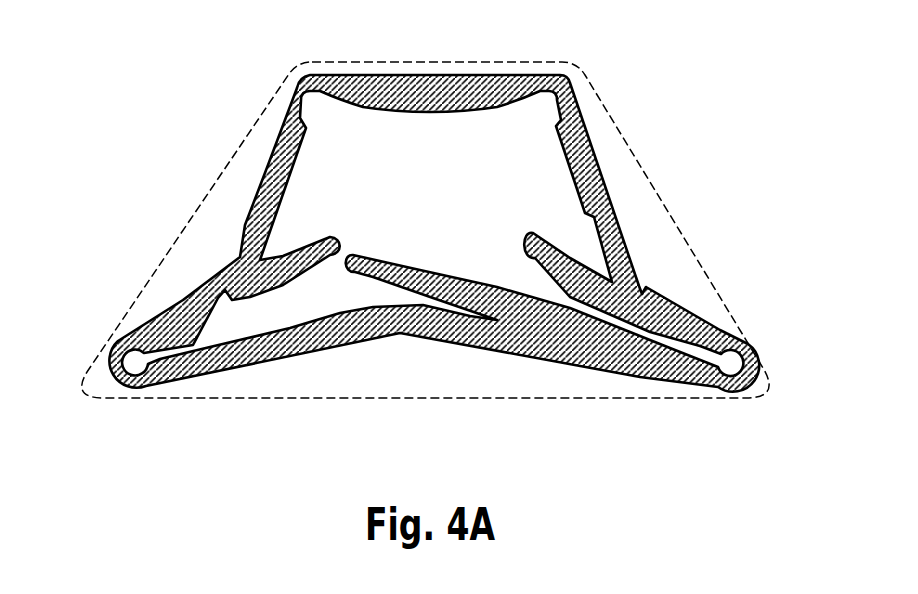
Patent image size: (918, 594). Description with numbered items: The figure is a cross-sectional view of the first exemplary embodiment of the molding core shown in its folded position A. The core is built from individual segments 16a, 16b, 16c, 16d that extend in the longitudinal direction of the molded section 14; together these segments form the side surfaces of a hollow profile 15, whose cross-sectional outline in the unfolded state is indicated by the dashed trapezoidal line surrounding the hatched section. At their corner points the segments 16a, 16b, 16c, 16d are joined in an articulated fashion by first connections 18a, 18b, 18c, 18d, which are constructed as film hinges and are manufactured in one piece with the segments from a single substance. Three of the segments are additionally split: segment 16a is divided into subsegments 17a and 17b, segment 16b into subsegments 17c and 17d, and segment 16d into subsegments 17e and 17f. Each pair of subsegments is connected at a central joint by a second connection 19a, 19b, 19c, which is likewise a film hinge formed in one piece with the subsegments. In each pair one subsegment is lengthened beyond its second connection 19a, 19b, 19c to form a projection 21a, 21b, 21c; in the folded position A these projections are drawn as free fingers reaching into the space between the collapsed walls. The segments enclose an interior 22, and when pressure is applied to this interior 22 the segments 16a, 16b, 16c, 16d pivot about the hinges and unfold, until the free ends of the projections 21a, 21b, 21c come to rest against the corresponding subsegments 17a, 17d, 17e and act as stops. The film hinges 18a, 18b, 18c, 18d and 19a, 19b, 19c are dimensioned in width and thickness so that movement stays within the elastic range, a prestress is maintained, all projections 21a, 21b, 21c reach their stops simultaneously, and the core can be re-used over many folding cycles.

The molded section 14 is at (425, 199).
The hollow profile 15 is at (479, 60).
The segment 16a is at (547, 375).
The segment 16b is at (613, 190).
The segment 16c is at (399, 74).
The segment 16d is at (249, 183).
The subsegment 17a is at (246, 366).
The subsegment 17b is at (642, 374).
The subsegment 17c is at (680, 307).
The subsegment 17d is at (595, 160).
The subsegment 17e is at (270, 150).
The subsegment 17f is at (182, 300).
The first connection 18a is at (110, 388).
The first connection 18b is at (752, 388).
The first connection 18c is at (577, 77).
The first connection 18d is at (298, 77).
The second connection 19a is at (460, 335).
The second connection 19b is at (640, 265).
The second connection 19c is at (235, 258).
The projection 21a is at (377, 280).
The projection 21b is at (544, 247).
The projection 21c is at (312, 244).
The interior 22 is at (445, 185).
The folded position A is at (21, 185).